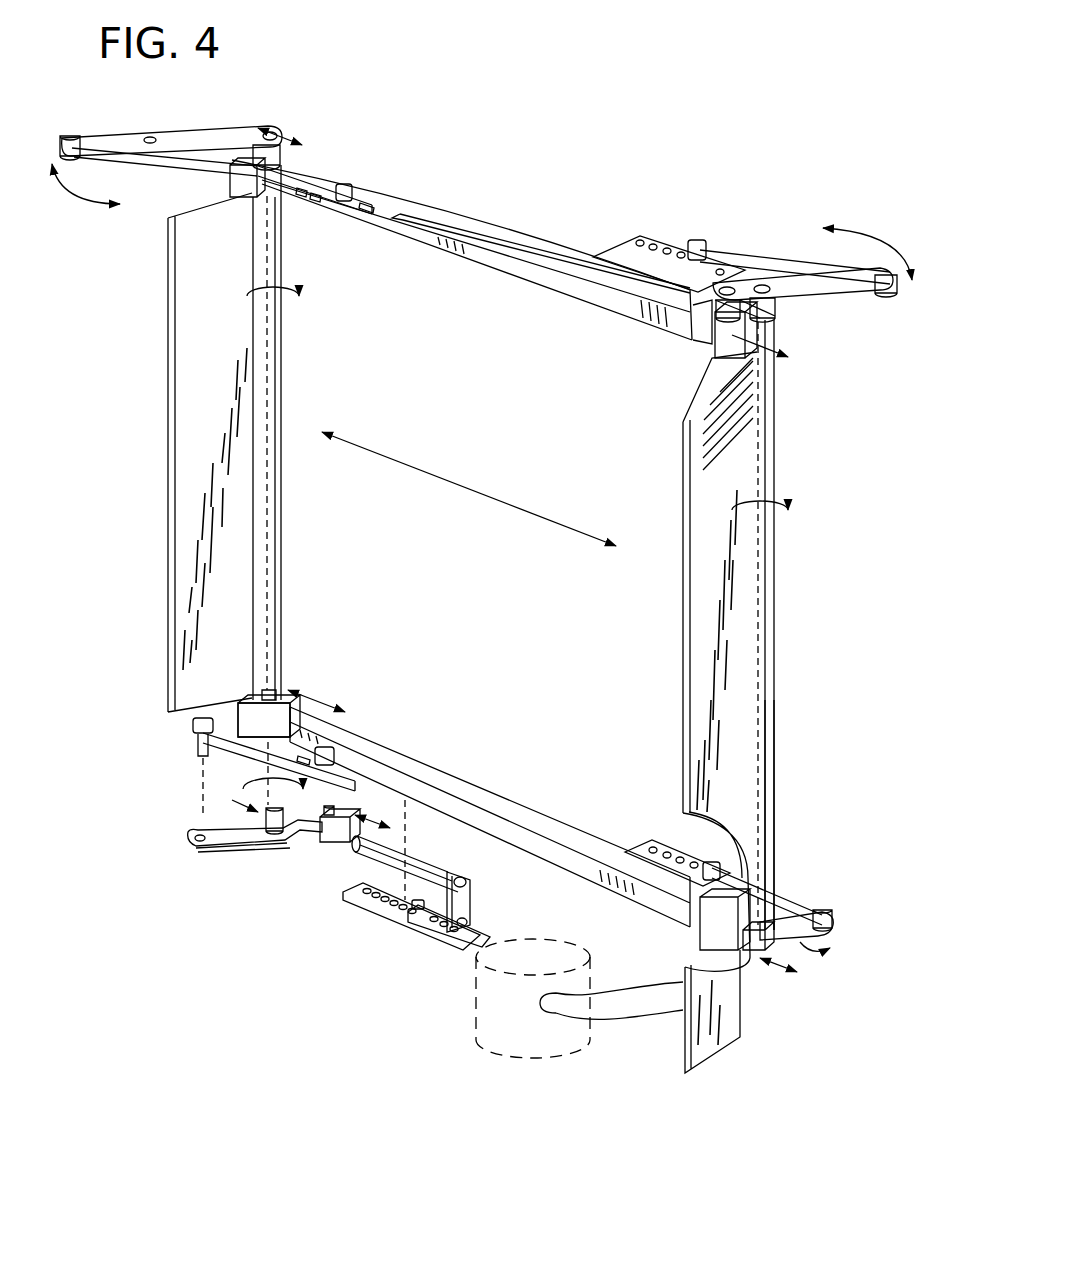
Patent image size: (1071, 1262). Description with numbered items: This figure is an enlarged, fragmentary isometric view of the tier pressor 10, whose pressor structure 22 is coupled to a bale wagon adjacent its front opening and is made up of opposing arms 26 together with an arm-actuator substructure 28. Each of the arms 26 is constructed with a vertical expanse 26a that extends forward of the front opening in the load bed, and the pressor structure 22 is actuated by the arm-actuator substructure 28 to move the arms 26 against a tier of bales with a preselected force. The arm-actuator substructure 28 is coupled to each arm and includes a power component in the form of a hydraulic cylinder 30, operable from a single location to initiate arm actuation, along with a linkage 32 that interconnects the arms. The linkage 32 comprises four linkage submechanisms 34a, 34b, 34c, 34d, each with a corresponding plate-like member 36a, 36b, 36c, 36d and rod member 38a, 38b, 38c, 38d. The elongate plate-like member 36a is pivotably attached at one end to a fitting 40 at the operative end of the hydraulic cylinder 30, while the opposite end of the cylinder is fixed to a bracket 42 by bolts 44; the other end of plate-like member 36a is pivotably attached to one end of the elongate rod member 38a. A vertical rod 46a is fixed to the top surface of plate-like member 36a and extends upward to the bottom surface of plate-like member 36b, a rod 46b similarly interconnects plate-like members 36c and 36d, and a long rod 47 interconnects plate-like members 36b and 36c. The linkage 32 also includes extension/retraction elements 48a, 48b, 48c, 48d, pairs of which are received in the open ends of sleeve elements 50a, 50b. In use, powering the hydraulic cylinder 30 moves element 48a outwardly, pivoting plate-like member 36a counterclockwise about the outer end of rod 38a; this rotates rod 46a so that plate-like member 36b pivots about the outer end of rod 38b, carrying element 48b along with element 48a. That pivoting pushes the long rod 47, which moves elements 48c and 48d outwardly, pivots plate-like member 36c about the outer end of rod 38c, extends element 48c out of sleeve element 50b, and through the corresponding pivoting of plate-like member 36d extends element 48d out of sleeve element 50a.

The tier pressor 10 is at (695, 146).
The pressor structure 22 is at (146, 410).
The opposing arms 26 is at (172, 358).
The vertical expanse 26a is at (205, 290).
The arm-actuator substructure 28 is at (274, 92).
The hydraulic cylinder 30 is at (417, 850).
The linkage 32 is at (128, 128).
The linkage submechanism 34a is at (242, 852).
The linkage submechanism 34b is at (186, 103).
The linkage submechanism 34c is at (852, 293).
The linkage submechanism 34d is at (906, 918).
The plate-like member 36a is at (216, 850).
The plate-like member 36b is at (264, 99).
The plate-like member 36c is at (800, 296).
The plate-like member 36d is at (780, 950).
The rod member 38a is at (193, 732).
The rod member 38b is at (412, 168).
The rod member 38c is at (762, 276).
The rod member 38d is at (780, 895).
The fitting 40 is at (346, 816).
The bracket 42 is at (378, 905).
The bolts 44 is at (446, 928).
The vertical rod 46a is at (280, 690).
The rod 46b is at (861, 743).
The long rod 47 is at (532, 247).
The extension/retraction element 48a is at (232, 706).
The extension/retraction element 48b is at (382, 128).
The extension/retraction element 48c is at (700, 338).
The extension/retraction element 48d is at (680, 933).
The sleeve element 50a is at (572, 771).
The sleeve element 50b is at (492, 182).